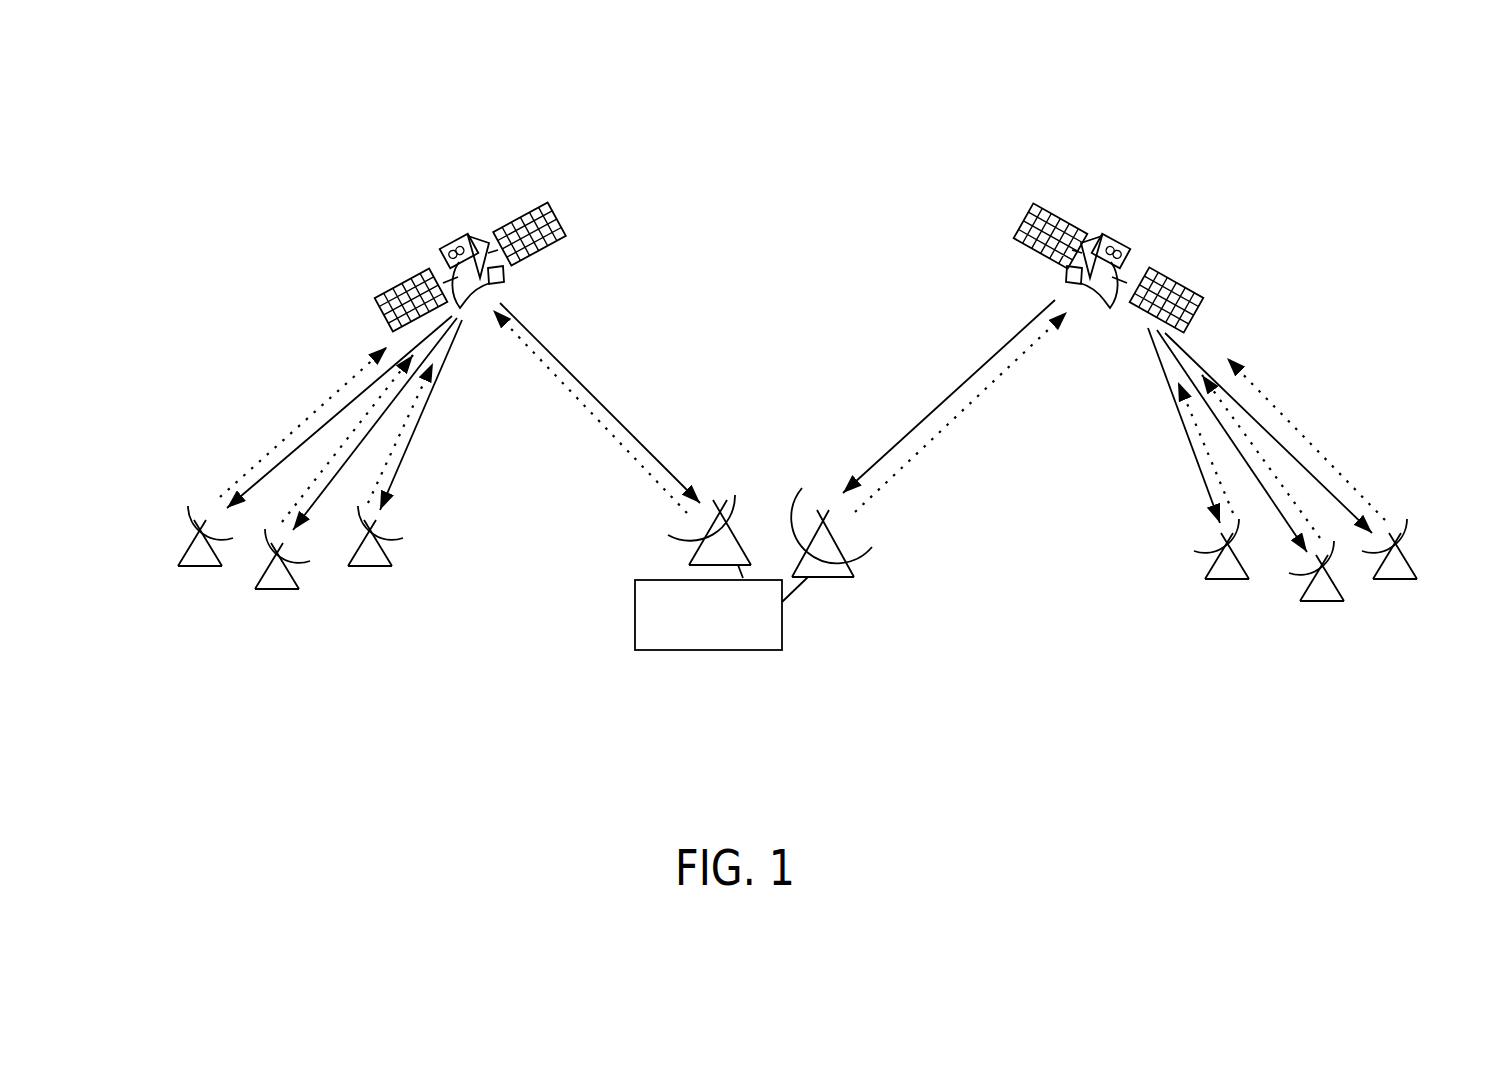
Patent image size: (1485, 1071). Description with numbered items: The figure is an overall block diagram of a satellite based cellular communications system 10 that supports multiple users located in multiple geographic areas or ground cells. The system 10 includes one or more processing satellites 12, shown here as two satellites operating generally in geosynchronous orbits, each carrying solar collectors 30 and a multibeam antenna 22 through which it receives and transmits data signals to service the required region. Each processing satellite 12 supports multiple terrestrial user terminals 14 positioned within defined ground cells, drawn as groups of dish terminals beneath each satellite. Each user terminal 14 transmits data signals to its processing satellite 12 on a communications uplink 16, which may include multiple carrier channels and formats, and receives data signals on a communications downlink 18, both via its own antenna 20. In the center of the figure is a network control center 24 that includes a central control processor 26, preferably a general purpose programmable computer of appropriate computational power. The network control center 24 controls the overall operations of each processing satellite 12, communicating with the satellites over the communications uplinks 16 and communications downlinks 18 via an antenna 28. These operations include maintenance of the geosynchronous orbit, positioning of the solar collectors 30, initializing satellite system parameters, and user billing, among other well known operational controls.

The satellite based cellular communications system 10 is at (1059, 95).
The processing satellite 12 is at (467, 237).
The user terminal 14 is at (383, 557).
The communications uplink 16 is at (278, 446).
The communications downlink 18 is at (424, 416).
The antenna 20 is at (377, 532).
The multibeam antenna 22 is at (493, 287).
The network control center 24 is at (637, 697).
The central control processor 26 is at (735, 652).
The antenna 28 is at (730, 510).
The solar collector 30 is at (565, 232).